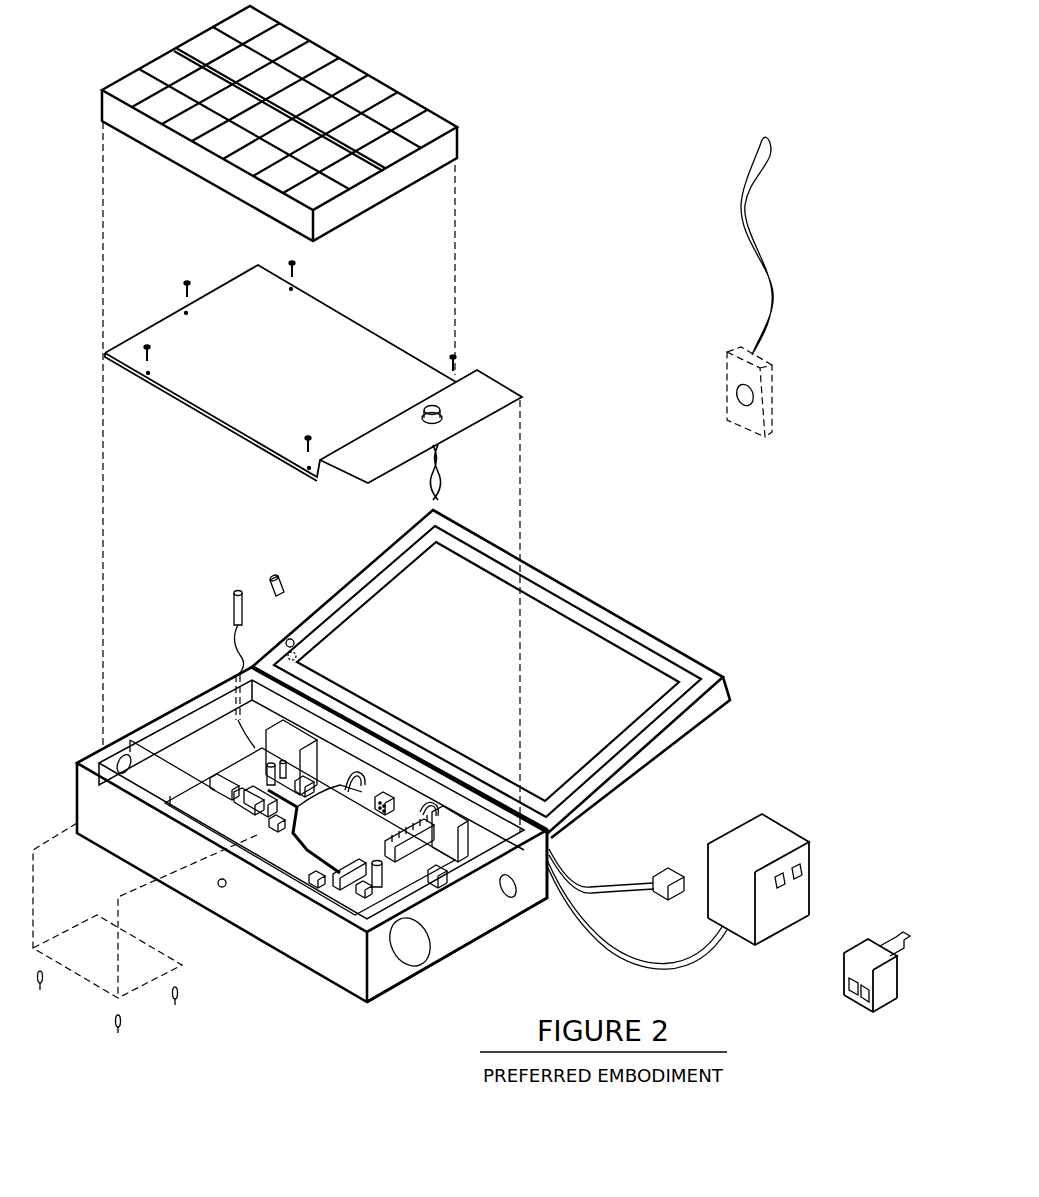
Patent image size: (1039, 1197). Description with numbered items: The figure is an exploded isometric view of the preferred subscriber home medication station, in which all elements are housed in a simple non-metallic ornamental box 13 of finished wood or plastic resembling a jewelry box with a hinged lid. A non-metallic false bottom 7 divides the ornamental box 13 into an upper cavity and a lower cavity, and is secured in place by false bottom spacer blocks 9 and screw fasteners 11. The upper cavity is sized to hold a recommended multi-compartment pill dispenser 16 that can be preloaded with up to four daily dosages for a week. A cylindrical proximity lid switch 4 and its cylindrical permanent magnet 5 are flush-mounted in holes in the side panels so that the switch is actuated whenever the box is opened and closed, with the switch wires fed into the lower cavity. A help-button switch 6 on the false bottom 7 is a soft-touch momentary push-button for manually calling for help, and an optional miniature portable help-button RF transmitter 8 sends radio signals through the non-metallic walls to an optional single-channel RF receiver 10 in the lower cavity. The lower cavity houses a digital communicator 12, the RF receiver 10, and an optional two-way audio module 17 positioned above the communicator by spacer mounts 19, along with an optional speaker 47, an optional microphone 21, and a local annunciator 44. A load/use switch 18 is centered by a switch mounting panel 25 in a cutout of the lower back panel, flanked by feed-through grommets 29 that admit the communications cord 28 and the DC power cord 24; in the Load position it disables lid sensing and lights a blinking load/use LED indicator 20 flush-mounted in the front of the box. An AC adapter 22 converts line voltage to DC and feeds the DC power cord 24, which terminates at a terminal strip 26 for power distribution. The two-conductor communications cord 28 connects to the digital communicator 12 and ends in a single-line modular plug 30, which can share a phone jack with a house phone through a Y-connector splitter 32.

The pill dispenser 16 is at (387, 88).
The false bottom 7 is at (363, 332).
The screw fasteners 11 is at (185, 293).
The help-button switch 6 is at (443, 430).
The miniature portable help-button RF transmitter 8 is at (777, 397).
The cylindrical permanent magnet 5 is at (285, 578).
The cylindrical proximity lid switch 4 is at (232, 592).
The digital communicator 12 is at (360, 905).
The 1-channel RF receiver 10 is at (237, 770).
The false bottom spacer blocks 9 is at (200, 742).
The local annunciator 44 is at (128, 766).
The terminal strip 26 is at (304, 778).
The communications cord 28 is at (420, 812).
The load/use switch 18 is at (378, 816).
The feed-through grommets 29 is at (368, 782).
The switch mounting panel 25 is at (378, 800).
The DC power cord 24 is at (322, 812).
The AC adapter 22 is at (767, 833).
The 1-line modular plug 30 is at (676, 880).
The Y-connector splitter 32 is at (853, 945).
The microphone 21 is at (510, 878).
The speaker 47 is at (430, 942).
The ornamental box 13 is at (480, 930).
The load/use LED indicator 20 is at (218, 884).
The 2-way audio module 17 is at (148, 988).
The spacer mounts 19 is at (42, 985).